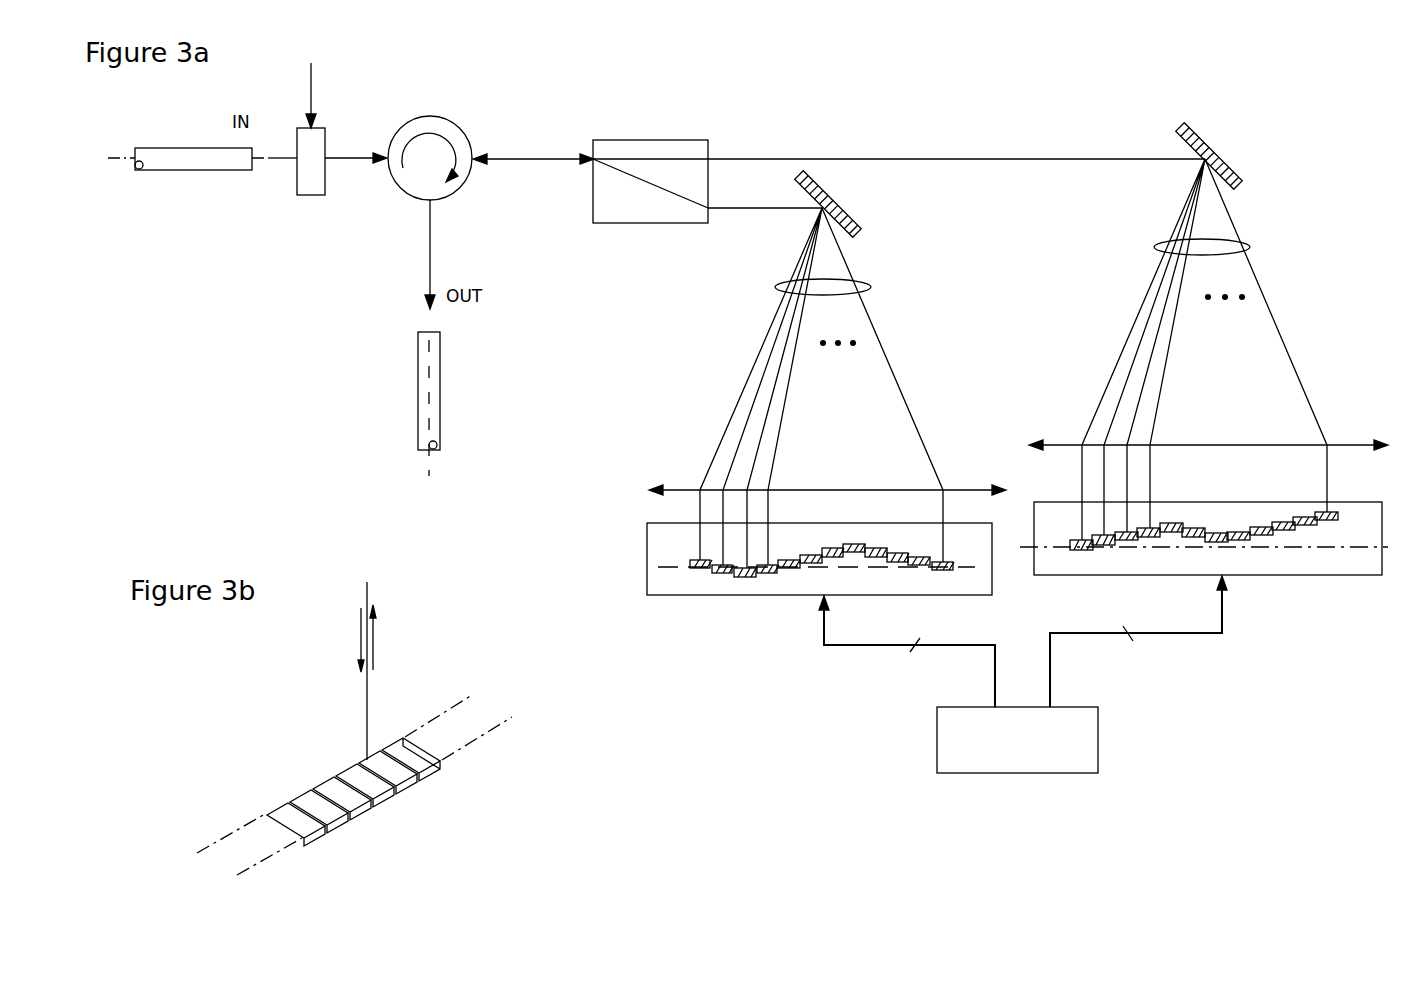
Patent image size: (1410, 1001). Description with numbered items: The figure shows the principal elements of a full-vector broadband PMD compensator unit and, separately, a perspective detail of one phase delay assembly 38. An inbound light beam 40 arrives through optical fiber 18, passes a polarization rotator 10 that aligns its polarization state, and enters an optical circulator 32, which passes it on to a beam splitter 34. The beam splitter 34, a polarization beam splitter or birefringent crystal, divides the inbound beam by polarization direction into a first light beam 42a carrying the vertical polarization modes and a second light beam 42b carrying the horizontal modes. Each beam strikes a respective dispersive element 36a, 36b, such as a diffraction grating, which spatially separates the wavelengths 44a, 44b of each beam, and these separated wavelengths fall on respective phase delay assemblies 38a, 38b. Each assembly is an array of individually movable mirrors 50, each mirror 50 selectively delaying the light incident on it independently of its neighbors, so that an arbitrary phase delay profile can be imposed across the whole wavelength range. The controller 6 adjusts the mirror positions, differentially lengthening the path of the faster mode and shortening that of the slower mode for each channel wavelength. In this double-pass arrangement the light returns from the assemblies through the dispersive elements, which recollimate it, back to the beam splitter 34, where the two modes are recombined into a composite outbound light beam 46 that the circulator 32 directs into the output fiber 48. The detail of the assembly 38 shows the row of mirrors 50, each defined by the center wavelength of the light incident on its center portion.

In FIG. 3A, the optical fiber 18 is at (202, 172).
In FIG. 3A, the polarization rotator 10 is at (309, 197).
In FIG. 3A, the inbound light beam 40 is at (347, 158).
In FIG. 3A, the optical circulator 32 is at (459, 128).
In FIG. 3A, the composite outbound light beam 46 is at (432, 252).
In FIG. 3A, the output fiber 48 is at (441, 378).
In FIG. 3A, the beam splitter/combiner 34 is at (651, 140).
In FIG. 3A, the first light beam 42a is at (779, 210).
In FIG. 3A, the second light beam 42b is at (928, 158).
In FIG. 3A, the dispersive element 36a is at (853, 216).
In FIG. 3A, the dispersive element 36b is at (1203, 145).
In FIG. 3A, the separated wavelengths 44a is at (873, 282).
In FIG. 3A, the separated wavelengths 44b is at (1248, 243).
In FIG. 3A, the phase delay assembly 38a is at (688, 597).
In FIG. 3A, the phase delay assembly 38b is at (1280, 577).
In FIG. 3A, the movable mirror 50 is at (830, 548).
In FIG. 3B, the movable mirror 50 is at (345, 768).
In FIG. 3A, the controller 6 is at (937, 750).
In FIG. 3B, the phase delay assembly 38 is at (347, 728).